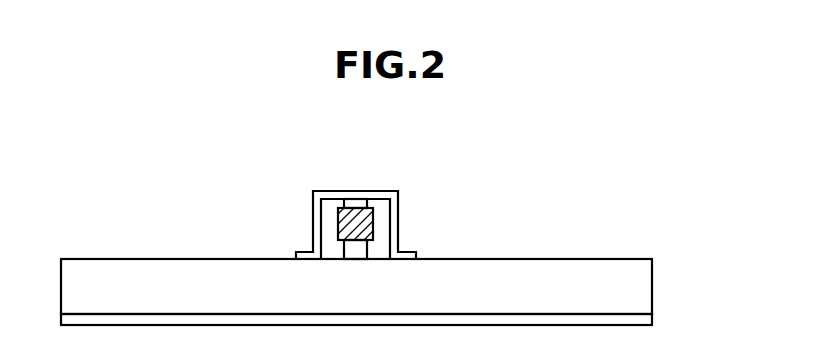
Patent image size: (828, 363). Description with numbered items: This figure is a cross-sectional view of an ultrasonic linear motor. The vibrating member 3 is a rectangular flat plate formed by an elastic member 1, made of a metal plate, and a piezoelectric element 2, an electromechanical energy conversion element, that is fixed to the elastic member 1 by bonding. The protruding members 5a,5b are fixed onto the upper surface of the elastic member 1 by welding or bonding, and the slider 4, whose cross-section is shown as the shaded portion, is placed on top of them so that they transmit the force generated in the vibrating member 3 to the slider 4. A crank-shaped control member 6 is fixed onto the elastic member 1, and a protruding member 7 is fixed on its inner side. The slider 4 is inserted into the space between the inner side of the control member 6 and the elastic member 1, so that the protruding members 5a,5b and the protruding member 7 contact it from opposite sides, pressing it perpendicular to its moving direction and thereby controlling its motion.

The elastic member 1 is at (652, 282).
The piezoelectric element 2 is at (652, 318).
The vibrating member 3 is at (703, 300).
The slider 4 is at (373, 224).
The protruding members 5a,5b is at (342, 248).
The control member 6 is at (329, 190).
The protruding member 7 is at (356, 201).